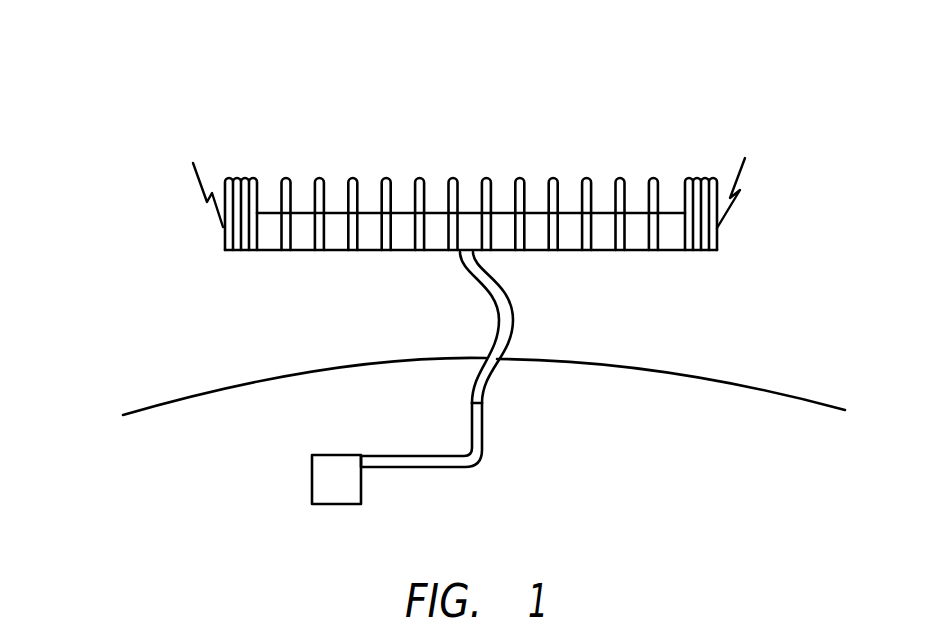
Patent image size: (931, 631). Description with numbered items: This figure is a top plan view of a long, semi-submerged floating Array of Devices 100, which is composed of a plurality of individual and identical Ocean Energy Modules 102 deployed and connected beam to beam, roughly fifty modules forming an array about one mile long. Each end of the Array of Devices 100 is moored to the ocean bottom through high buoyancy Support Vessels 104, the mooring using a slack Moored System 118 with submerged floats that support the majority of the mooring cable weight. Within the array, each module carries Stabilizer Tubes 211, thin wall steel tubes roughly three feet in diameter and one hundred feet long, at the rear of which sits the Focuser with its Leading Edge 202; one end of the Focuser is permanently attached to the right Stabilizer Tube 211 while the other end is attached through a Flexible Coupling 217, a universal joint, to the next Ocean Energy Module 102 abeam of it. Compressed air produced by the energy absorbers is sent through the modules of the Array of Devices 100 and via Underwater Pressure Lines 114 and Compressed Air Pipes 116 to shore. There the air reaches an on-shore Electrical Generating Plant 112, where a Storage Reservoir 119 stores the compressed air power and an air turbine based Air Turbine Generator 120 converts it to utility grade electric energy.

The Array of Devices 100 is at (163, 108).
The Ocean Energy Module 102 is at (335, 230).
The Support Vessel 104 is at (229, 178).
The Leading Edge 202 is at (267, 213).
The Flexible Coupling 217 is at (413, 250).
The Stabilizer Tube 211 is at (486, 178).
The Moored System 118 is at (745, 178).
The Underwater Pressure Lines 114 is at (513, 316).
The Compressed Air Pipes 116 is at (485, 417).
The Electrical Generating Plant 112 is at (320, 455).
The Air Turbine Generator 120 is at (331, 472).
The Storage Reservoir 119 is at (350, 473).